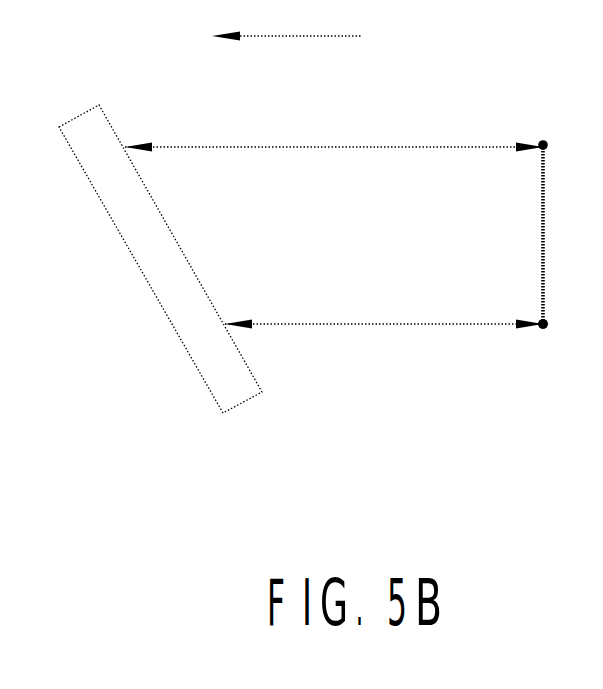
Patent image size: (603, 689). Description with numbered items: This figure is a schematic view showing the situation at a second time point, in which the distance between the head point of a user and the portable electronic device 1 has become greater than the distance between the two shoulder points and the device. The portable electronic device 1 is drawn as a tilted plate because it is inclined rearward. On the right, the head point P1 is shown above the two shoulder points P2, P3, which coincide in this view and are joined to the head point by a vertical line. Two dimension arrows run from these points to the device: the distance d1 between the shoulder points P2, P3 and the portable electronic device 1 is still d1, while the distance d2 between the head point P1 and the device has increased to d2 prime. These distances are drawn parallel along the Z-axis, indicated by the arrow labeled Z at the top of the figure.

The portable electronic device 1 is at (172, 275).
The head point P1 is at (546, 215).
The shoulder point P2 is at (530, 342).
The shoulder point P3 is at (561, 342).
The distance d1 is at (384, 340).
The distance d2 is at (334, 131).
The Z-axis Z is at (287, 21).